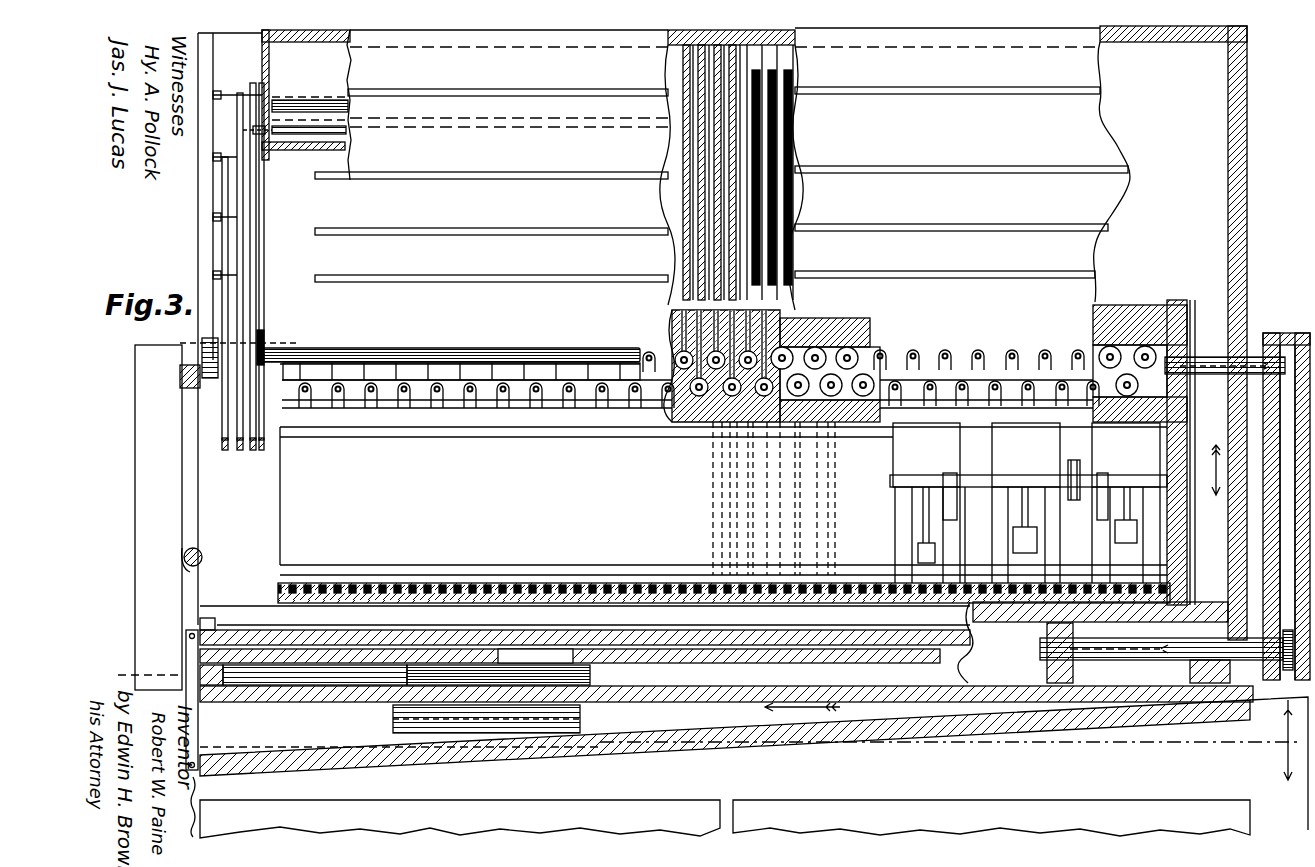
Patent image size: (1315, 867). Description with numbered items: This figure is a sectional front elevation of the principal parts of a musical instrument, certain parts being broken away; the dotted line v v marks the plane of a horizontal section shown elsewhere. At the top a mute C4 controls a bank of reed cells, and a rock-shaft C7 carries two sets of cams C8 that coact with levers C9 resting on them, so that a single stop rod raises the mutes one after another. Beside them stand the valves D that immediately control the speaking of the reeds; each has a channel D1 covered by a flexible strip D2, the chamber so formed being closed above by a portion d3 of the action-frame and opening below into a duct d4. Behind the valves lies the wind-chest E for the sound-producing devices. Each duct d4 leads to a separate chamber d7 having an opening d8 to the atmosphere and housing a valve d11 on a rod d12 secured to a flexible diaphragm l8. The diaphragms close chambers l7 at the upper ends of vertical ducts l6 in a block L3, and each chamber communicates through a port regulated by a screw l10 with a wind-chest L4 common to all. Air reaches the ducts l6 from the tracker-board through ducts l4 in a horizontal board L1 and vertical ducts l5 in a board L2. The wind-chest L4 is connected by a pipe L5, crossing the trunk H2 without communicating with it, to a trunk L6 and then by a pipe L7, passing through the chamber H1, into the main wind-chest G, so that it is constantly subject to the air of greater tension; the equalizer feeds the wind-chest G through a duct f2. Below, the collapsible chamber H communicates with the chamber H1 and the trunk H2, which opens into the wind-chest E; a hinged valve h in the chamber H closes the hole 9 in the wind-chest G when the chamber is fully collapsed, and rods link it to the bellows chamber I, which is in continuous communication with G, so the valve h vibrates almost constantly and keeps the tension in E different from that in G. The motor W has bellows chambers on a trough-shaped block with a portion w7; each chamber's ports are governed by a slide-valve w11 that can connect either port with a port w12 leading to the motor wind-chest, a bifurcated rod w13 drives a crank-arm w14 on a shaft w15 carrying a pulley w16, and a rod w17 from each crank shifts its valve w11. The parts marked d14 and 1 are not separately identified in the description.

The mute C4 is at (306, 120).
The rock-shaft C7 is at (355, 350).
The cams C8 is at (266, 346).
The levers C9 is at (265, 334).
The portion of the action-frame d3 is at (665, 33).
The valves D is at (762, 57).
The channel D1 is at (740, 58).
The flexible strip D2 is at (730, 75).
The wind-chest for the sound-producing devices E is at (1137, 172).
The pinion housing d14 is at (672, 314).
The duct d4 is at (790, 320).
The chamber d7 is at (690, 397).
The opening to the atmosphere d8 is at (463, 397).
The valve d11 is at (715, 406).
The rod d12 is at (537, 393).
The horizontal board L1 is at (480, 583).
The board L2 is at (723, 498).
The block L3 is at (1158, 262).
The wind-chest L4 is at (830, 320).
The pipe or duct L5 is at (190, 365).
The trunk L6 is at (1296, 332).
The pipe L7 is at (1198, 640).
The ducts l4 is at (550, 583).
The vertical ducts l5 is at (722, 517).
The vertical ducts l6 is at (1190, 422).
The chambers l7 is at (885, 353).
The flexible diaphragm l8 is at (850, 358).
The screw l10 is at (814, 325).
The rail line 1 is at (372, 583).
The motor W is at (1028, 503).
The portion of trough-shaped block w7 is at (1028, 535).
The slide-valve w11 is at (918, 548).
The port w12 is at (915, 533).
The bifurcated rod w13 is at (890, 484).
The crank-arm w14 is at (934, 480).
The shaft w15 is at (976, 476).
The pulley w16 is at (1079, 469).
The rod w17 is at (1134, 482).
The chamber H is at (750, 676).
The chamber H1 is at (1148, 675).
The trunk H2 is at (1208, 497).
The chamber I is at (252, 640).
The hole in wind-chest 9 is at (305, 703).
The valve h is at (580, 717).
The duct f2 is at (467, 755).
The main wind-chest G is at (1094, 642).
The section line v v is at (705, 653).